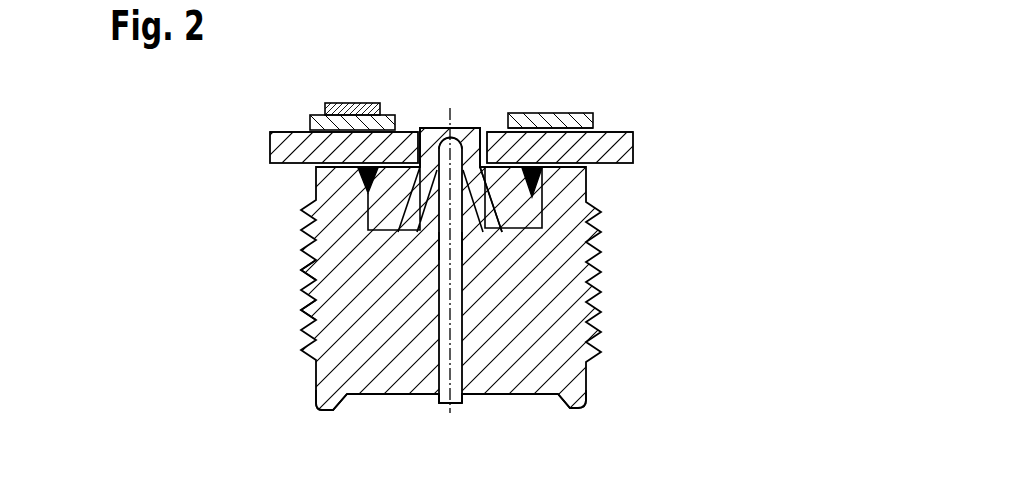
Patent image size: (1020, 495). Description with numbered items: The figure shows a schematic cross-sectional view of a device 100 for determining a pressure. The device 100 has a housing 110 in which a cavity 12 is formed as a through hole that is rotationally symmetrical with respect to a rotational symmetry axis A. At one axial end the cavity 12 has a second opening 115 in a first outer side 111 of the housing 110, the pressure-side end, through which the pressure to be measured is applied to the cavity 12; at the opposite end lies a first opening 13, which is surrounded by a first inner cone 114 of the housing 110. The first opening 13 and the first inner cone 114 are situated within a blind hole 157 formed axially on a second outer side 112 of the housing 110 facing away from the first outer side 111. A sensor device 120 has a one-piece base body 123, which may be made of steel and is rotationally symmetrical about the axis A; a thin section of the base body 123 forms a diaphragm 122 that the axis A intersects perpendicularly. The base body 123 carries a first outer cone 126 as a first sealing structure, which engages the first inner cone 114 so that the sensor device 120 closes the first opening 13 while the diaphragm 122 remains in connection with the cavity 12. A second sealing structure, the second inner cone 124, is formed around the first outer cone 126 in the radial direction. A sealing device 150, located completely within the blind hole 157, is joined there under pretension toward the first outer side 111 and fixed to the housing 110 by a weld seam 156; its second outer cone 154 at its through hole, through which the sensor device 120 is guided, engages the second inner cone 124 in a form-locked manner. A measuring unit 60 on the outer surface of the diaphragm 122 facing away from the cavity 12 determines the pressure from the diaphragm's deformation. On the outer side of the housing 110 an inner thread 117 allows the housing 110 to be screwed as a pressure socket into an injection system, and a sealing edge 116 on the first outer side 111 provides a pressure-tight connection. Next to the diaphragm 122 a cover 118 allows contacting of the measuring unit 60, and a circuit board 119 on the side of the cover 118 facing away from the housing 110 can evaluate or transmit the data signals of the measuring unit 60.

The device for determining a pressure 100 is at (712, 102).
The housing 110 is at (547, 352).
The first outer side 111 is at (540, 397).
The second outer side 112 is at (572, 128).
The first inner cone 114 is at (437, 250).
The second opening 115 is at (432, 406).
The sealing edge 116 is at (330, 398).
The inner thread 117 is at (304, 318).
The cover 118 is at (298, 150).
The circuit board 119 is at (310, 124).
The sensor device 120 is at (440, 128).
The diaphragm 122 is at (447, 127).
The base body 123 is at (548, 206).
The second inner cone 124 is at (467, 250).
The first outer cone 126 is at (315, 265).
The sealing device 150 is at (405, 194).
The second outer cone 154 is at (560, 211).
The weld seam 156 is at (355, 182).
The blind hole 157 is at (548, 245).
The cavity 12 is at (441, 404).
The first opening 13 is at (420, 120).
The measuring unit 60 is at (468, 125).
The rotational symmetry axis A is at (453, 402).